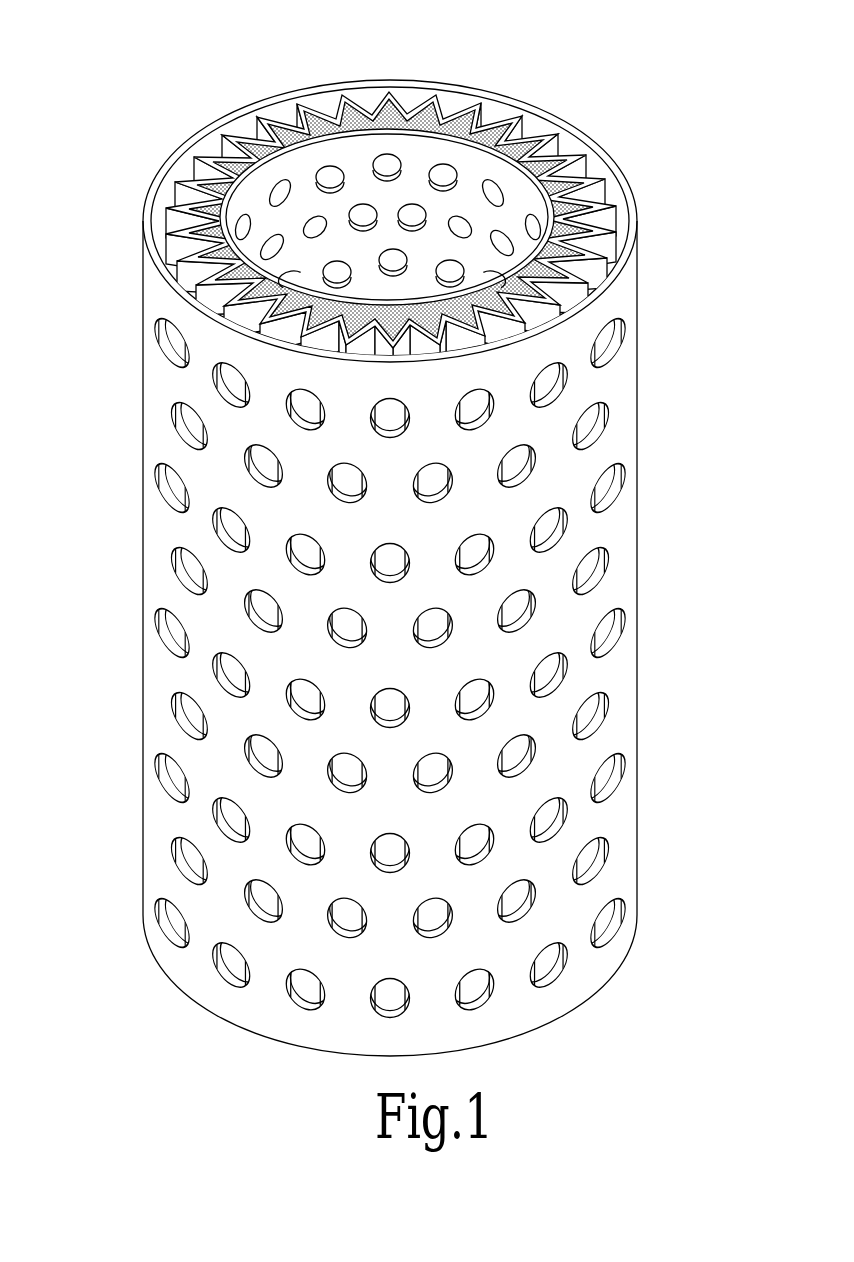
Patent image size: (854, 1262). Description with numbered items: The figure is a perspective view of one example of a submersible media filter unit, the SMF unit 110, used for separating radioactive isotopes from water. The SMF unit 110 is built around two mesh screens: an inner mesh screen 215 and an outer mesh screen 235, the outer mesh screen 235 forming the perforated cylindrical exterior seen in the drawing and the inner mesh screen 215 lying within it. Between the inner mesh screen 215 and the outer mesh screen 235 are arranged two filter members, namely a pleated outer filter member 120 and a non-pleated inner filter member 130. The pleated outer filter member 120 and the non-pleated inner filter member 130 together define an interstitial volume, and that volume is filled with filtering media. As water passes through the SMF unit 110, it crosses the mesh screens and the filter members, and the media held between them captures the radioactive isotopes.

The SMF unit 110 is at (140, 150).
The pleated outer filter member 120 is at (519, 135).
The non-pleated inner filter member 130 is at (415, 190).
The inner mesh screen 215 is at (364, 180).
The outer mesh screen 235 is at (622, 302).